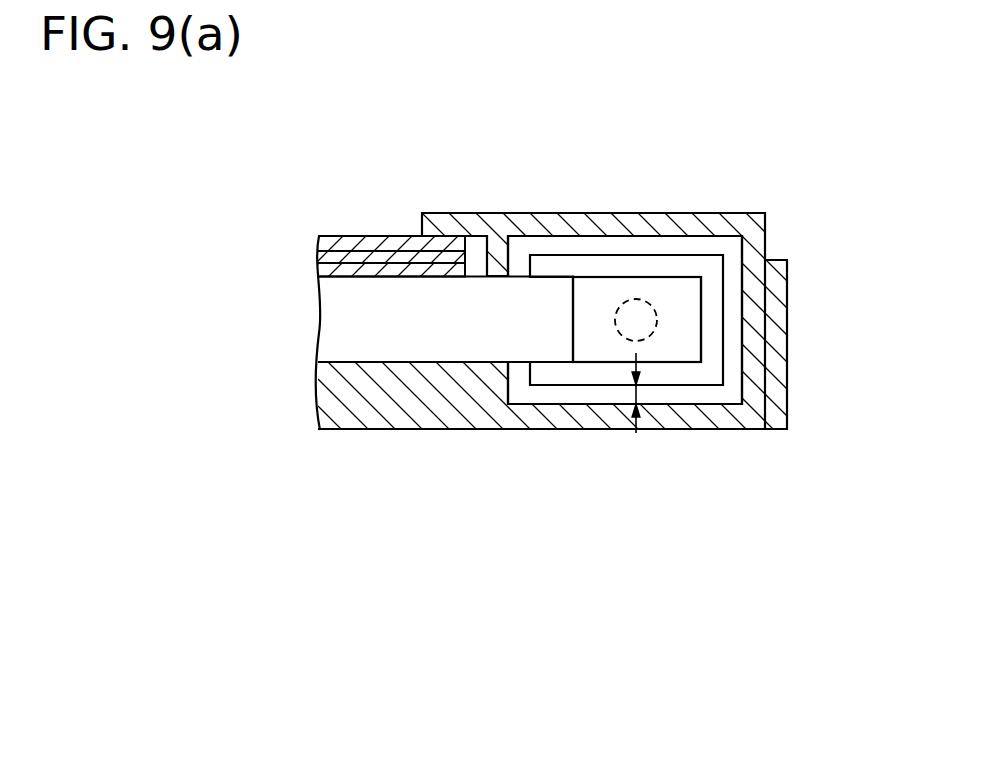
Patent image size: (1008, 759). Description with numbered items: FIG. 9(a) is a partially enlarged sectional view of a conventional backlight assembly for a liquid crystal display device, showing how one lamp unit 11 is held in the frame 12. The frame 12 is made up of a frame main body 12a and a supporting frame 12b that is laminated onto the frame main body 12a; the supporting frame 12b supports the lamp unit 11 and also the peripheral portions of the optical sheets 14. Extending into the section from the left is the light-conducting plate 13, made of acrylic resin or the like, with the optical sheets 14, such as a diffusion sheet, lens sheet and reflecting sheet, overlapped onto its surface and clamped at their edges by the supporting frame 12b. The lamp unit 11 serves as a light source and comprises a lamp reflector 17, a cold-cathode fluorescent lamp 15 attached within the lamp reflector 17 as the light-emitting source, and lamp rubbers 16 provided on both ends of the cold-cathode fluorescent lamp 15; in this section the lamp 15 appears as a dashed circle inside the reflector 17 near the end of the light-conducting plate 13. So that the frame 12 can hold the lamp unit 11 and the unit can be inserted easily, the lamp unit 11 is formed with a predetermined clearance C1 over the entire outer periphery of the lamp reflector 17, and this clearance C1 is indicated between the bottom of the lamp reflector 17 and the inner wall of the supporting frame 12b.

The lamp unit 11 is at (653, 248).
The frame 12 is at (872, 118).
The frame main body 12a is at (778, 289).
The supporting frame 12b is at (720, 225).
The light-conducting plate 13 is at (355, 328).
The optical sheets 14 is at (360, 257).
The cold-cathode fluorescent lamp 15 is at (626, 320).
The lamp rubbers 16 is at (676, 346).
The lamp reflector 17 is at (608, 268).
The clearance C1 is at (636, 390).